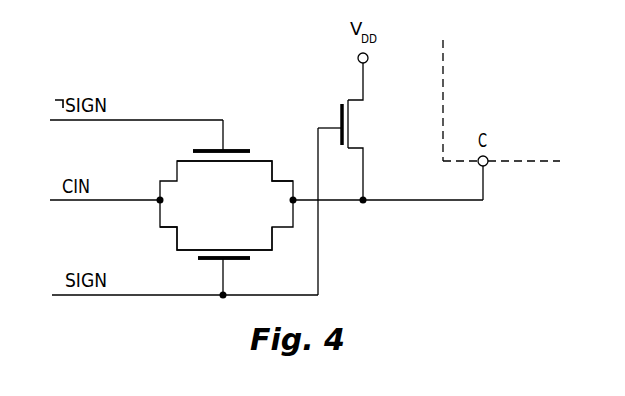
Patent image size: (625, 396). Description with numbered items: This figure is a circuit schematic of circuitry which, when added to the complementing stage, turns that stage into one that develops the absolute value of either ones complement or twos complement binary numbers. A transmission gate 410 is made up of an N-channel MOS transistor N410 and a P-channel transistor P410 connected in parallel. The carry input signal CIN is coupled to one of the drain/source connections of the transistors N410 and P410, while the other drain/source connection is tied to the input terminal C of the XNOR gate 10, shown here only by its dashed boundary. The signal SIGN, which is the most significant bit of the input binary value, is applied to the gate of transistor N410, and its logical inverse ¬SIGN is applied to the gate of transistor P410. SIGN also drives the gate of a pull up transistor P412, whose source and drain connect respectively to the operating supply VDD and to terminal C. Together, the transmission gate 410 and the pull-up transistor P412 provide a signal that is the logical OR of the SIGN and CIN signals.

The transmission gate 410 is at (237, 217).
The P-channel transistor P410 is at (161, 181).
The N-channel MOS transistor N410 is at (257, 259).
The pull up transistor P412 is at (351, 179).
The XNOR gate 10 is at (527, 163).